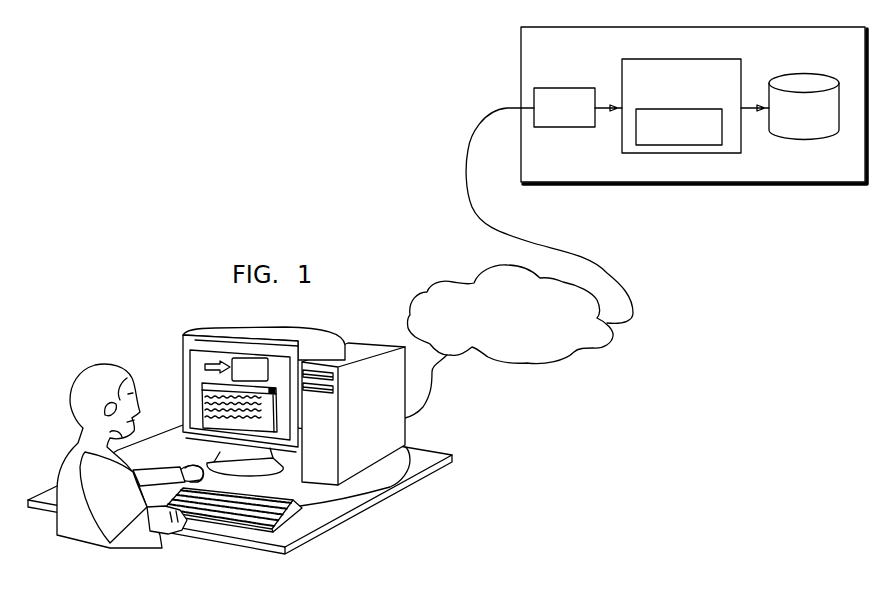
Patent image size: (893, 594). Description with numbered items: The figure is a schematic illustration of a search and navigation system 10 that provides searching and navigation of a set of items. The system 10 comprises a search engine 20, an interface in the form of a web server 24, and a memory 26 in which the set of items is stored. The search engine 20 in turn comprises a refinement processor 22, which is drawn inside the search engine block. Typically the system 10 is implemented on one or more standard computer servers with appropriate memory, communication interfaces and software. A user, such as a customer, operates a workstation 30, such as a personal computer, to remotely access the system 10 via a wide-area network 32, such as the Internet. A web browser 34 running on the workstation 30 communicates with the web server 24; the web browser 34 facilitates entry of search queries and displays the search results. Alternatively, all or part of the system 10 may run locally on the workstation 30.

The search and navigation system 10 is at (521, 80).
The search engine 20 is at (710, 59).
The refinement processor 22 is at (705, 109).
The web server 24 is at (587, 88).
The memory 26 is at (820, 75).
The workstation 30 is at (357, 353).
The wide-area network (WAN) 32 is at (447, 283).
The web browser 34 is at (192, 381).